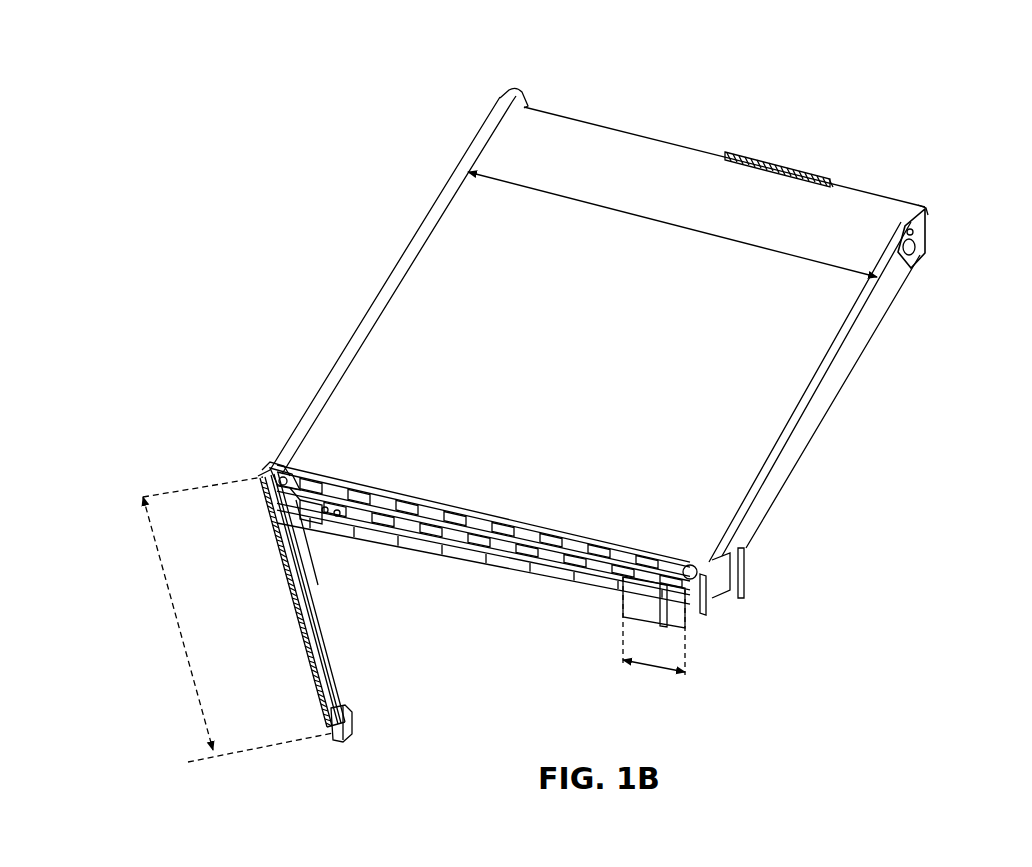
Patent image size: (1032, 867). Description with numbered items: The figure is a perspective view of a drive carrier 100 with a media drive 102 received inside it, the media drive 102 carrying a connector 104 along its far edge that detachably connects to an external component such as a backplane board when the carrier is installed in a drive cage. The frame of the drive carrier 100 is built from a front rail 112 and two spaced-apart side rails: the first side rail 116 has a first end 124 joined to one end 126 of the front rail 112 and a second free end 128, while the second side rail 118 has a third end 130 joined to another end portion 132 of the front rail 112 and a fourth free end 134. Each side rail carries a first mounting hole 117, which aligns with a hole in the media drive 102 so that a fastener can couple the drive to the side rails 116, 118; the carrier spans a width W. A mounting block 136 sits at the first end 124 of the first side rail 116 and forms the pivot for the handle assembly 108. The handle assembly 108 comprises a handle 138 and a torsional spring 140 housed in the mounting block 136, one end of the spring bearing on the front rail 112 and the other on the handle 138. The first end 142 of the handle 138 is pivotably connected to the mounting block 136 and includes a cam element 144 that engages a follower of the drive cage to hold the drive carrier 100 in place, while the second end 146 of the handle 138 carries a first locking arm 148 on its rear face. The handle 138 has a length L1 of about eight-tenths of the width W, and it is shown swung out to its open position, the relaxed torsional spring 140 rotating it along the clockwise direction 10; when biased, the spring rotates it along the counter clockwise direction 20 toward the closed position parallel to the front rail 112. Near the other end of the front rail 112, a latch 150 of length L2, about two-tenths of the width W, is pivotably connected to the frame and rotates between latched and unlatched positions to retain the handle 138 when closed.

The clockwise direction 10 is at (186, 182).
The counter clockwise direction 20 is at (186, 286).
The drive carrier 100 is at (586, 336).
The media drive 102 is at (592, 146).
The connector 104 is at (782, 164).
The handle assembly 108 is at (283, 600).
The front rail 112 is at (540, 514).
The first side rail 116 is at (930, 233).
The first mounting hole 117 is at (916, 258).
The second side rail 118 is at (438, 205).
The first end 124 is at (271, 468).
The one end 126 is at (284, 465).
The second free end 128 is at (510, 90).
The third end 130 is at (722, 571).
The another end portion 132 is at (715, 600).
The fourth free end 134 is at (926, 212).
The mounting block 136 is at (265, 470).
The handle 138 is at (297, 633).
The torsional spring 140 is at (322, 526).
The first end 142 is at (262, 489).
The cam element 144 is at (258, 475).
The second end 146 is at (326, 726).
The first locking arm 148 is at (349, 722).
The latch 150 is at (632, 600).
The width W is at (645, 213).
The length of the handle L1 is at (167, 580).
The length of the latch L2 is at (657, 667).